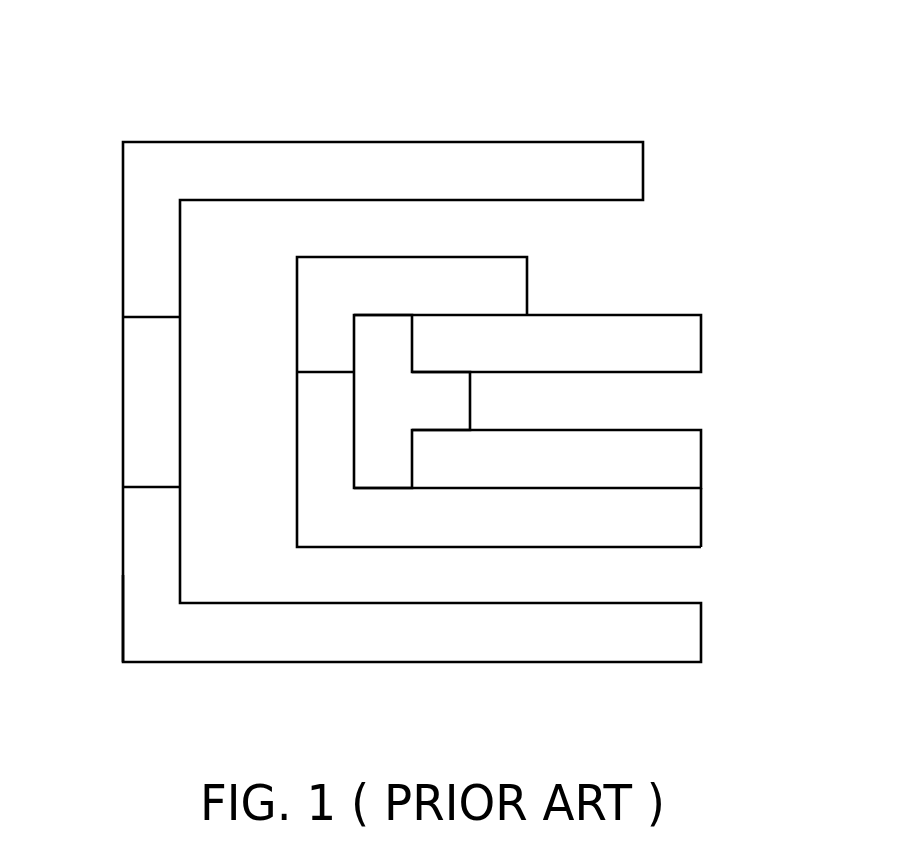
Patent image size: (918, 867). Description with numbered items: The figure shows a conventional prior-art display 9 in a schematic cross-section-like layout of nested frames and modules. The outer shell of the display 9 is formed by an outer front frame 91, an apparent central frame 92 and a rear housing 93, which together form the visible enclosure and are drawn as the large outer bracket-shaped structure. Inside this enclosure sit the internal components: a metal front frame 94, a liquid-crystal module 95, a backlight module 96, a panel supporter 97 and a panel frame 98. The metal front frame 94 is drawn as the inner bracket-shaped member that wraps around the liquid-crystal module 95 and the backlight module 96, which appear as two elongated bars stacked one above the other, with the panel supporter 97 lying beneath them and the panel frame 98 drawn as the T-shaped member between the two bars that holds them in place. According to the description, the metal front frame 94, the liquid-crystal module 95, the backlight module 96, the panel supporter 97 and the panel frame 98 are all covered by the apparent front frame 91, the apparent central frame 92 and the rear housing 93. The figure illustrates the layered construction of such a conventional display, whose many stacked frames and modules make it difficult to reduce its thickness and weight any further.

The conventional display 9 is at (63, 44).
The outer front frame 91 is at (152, 229).
The apparent central frame 92 is at (152, 459).
The rear housing 93 is at (152, 574).
The metal front frame 94 is at (383, 287).
The first electrode 95 is at (670, 344).
The backlight module 96 is at (670, 459).
The panel supporter 97 is at (670, 518).
The panel frame 98 is at (383, 400).